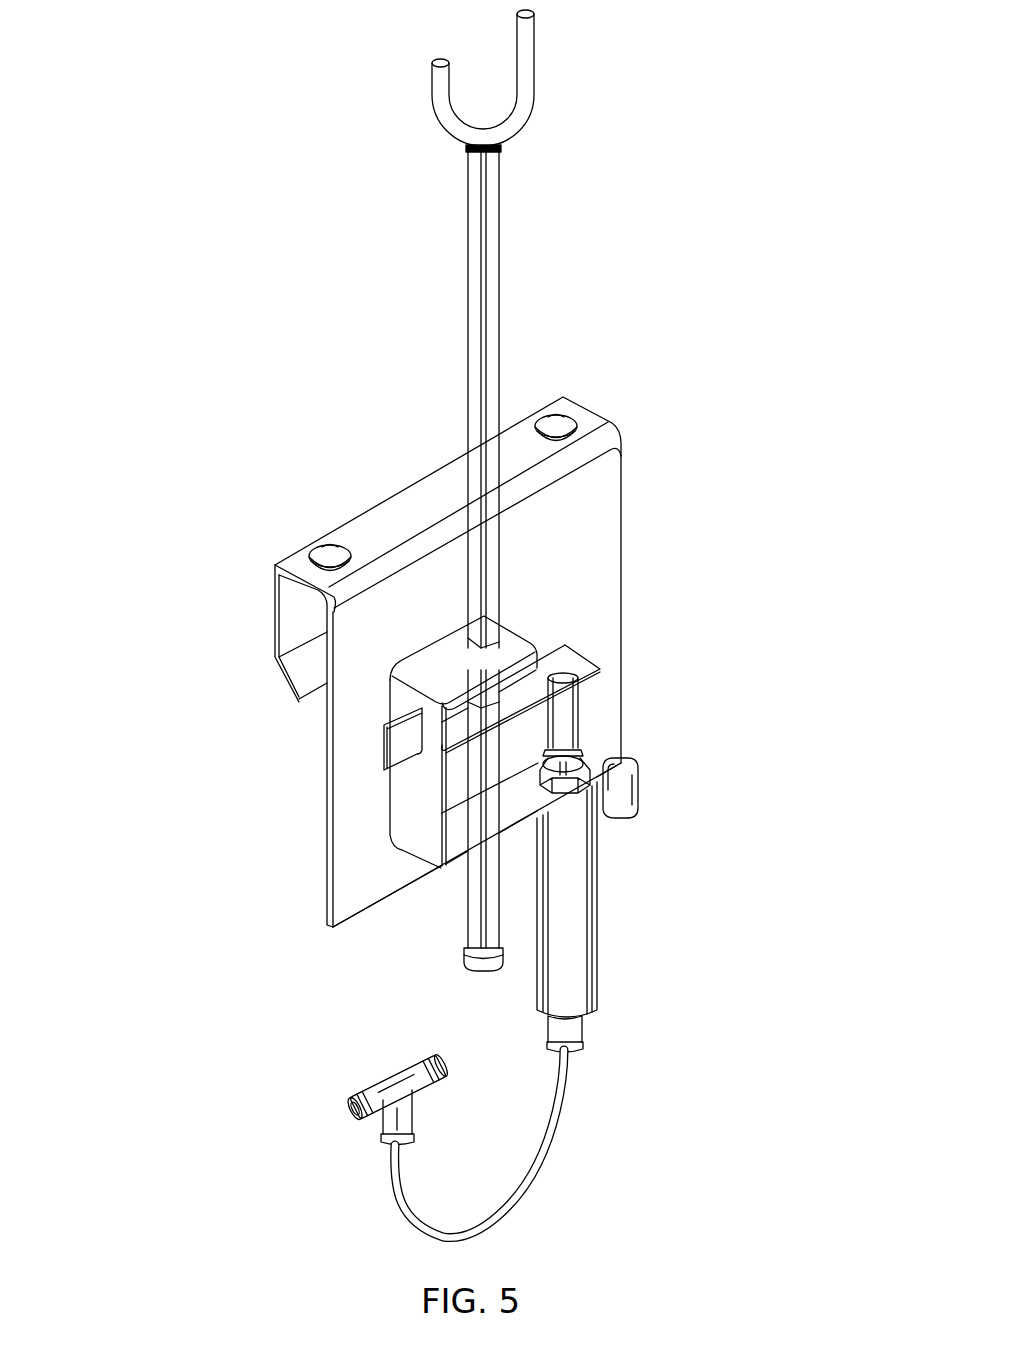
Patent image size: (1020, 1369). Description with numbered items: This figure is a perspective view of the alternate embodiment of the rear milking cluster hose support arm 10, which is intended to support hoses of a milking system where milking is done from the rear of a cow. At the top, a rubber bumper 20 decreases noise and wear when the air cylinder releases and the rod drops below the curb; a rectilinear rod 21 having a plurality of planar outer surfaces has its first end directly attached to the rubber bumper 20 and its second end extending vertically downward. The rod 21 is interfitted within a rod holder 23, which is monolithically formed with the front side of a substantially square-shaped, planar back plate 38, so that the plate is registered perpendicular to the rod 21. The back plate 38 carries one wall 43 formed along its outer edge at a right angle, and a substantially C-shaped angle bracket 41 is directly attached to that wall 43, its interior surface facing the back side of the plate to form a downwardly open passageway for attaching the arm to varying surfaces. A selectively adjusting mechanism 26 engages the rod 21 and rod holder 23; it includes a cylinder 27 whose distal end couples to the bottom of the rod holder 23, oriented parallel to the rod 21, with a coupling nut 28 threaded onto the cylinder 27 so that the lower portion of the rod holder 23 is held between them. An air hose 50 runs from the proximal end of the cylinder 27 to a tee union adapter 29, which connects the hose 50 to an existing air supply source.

The rear milking cluster hose support arm 10 is at (198, 232).
The rubber bumper 20 is at (505, 148).
The rectilinear rod 21 is at (497, 294).
The rod holder 23 is at (416, 822).
The selectively adjusting mechanism 26 is at (577, 666).
The cylinder 27 is at (567, 973).
The coupling nut 28 is at (577, 763).
The tee union adapter 29 is at (402, 1093).
The back plate 38 is at (517, 640).
The C-shaped angle bracket 41 is at (258, 588).
The one wall 43 is at (388, 497).
The air hose 50 is at (538, 1165).